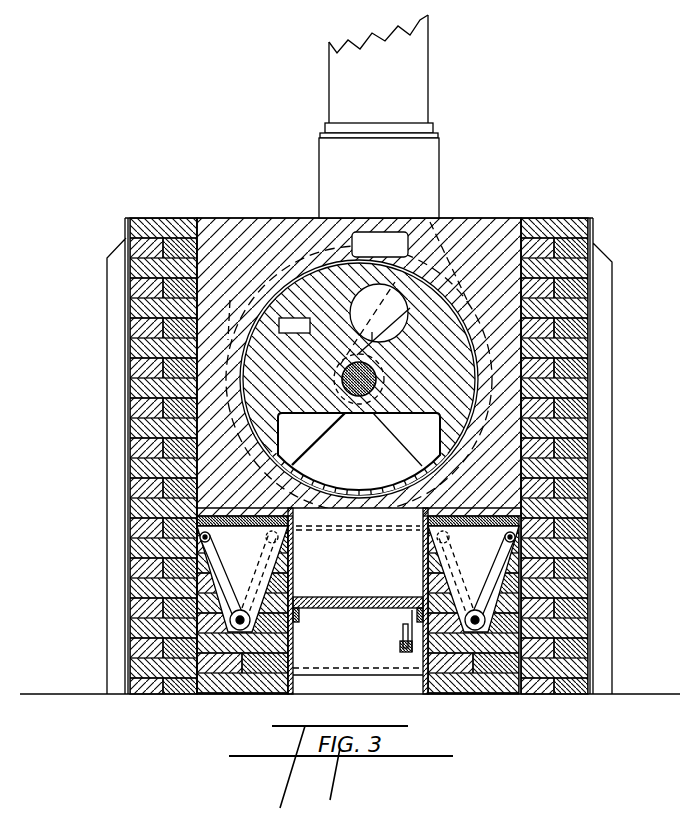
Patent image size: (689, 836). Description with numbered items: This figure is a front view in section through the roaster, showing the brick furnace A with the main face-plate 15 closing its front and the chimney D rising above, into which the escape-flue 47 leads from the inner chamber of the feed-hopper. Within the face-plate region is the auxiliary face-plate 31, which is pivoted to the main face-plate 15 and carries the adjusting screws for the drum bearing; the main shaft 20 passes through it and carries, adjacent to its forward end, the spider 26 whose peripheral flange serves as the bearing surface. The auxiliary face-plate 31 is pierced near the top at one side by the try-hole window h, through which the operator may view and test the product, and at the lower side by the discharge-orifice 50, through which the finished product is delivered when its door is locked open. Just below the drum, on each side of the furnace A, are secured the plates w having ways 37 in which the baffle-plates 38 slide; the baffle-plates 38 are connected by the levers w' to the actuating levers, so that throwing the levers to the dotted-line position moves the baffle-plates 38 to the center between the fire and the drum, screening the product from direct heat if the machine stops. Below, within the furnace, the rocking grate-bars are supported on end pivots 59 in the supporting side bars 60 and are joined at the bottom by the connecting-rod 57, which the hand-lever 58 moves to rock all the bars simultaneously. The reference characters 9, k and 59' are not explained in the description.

The main face-plate 15 is at (497, 232).
The escape-flue 47 is at (380, 244).
The try-hole window h is at (294, 326).
The bore 9 is at (379, 313).
The auxiliary face-plate 31 is at (372, 331).
The spider 26 is at (356, 374).
The main shaft 20 is at (357, 397).
The discharge-orifice 50 is at (359, 451).
The rim k is at (377, 496).
The ways 37 is at (299, 528).
The baffle-plates 38 is at (358, 579).
The plates w is at (358, 601).
The levers w' is at (357, 580).
The supporting side bars 60 is at (297, 600).
The plate 59' is at (358, 593).
The end pivots 59 is at (414, 598).
The hand-lever 58 is at (402, 634).
The connecting-rod 57 is at (404, 654).
The furnace A is at (358, 609).
The chimney D is at (379, 116).